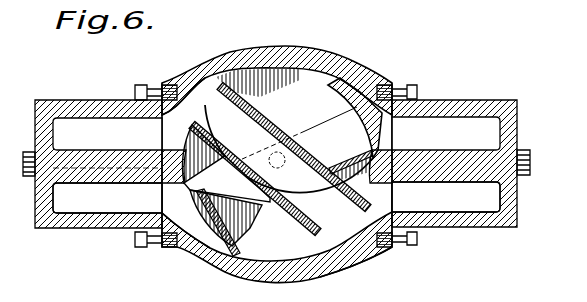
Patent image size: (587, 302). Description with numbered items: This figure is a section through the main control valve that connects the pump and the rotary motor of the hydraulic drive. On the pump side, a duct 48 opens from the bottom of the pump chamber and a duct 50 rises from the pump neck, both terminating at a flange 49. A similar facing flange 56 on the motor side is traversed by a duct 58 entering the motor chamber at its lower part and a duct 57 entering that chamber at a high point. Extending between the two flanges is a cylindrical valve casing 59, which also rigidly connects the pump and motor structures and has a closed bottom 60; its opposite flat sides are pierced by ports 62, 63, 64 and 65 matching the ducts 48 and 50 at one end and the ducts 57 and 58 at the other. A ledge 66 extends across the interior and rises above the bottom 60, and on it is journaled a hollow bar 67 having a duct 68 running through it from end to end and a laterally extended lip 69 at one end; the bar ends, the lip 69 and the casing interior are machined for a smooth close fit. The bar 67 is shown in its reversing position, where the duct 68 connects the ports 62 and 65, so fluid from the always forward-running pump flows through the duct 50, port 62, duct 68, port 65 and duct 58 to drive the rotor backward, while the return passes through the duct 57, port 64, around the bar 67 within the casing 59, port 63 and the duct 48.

The duct 48 is at (172, 203).
The flange 49 is at (150, 88).
The duct 50 is at (170, 122).
The flange 56 is at (400, 85).
The duct 57 is at (378, 125).
The duct 58 is at (390, 199).
The valve casing 59 is at (289, 46).
The closed bottom 60 is at (250, 250).
The port 62 is at (197, 92).
The port 63 is at (193, 236).
The port 64 is at (350, 87).
The port 65 is at (358, 235).
The ledge 66 is at (208, 178).
The hollow bar 67 is at (330, 118).
The duct 68 is at (357, 168).
The lip 69 is at (293, 217).